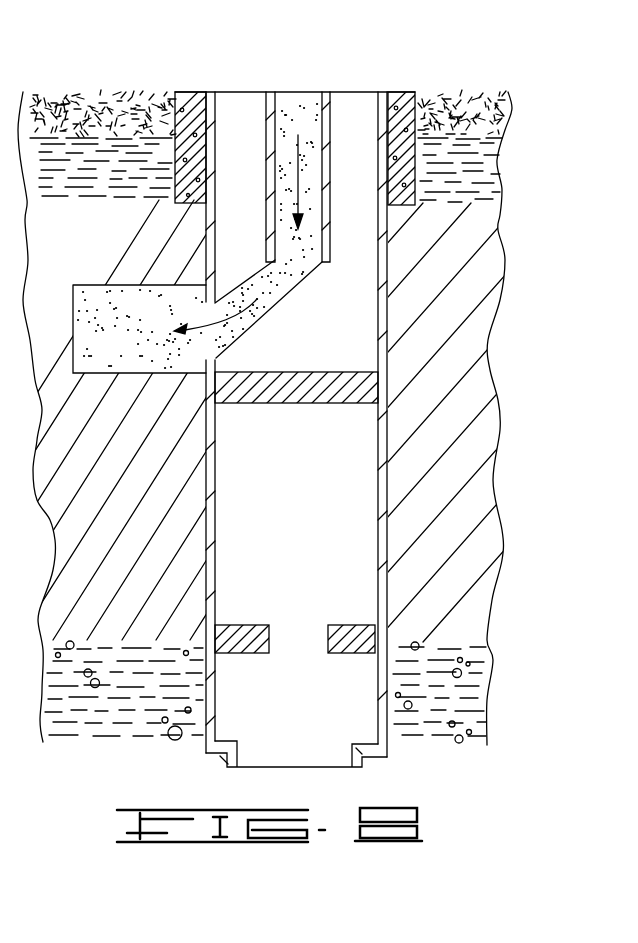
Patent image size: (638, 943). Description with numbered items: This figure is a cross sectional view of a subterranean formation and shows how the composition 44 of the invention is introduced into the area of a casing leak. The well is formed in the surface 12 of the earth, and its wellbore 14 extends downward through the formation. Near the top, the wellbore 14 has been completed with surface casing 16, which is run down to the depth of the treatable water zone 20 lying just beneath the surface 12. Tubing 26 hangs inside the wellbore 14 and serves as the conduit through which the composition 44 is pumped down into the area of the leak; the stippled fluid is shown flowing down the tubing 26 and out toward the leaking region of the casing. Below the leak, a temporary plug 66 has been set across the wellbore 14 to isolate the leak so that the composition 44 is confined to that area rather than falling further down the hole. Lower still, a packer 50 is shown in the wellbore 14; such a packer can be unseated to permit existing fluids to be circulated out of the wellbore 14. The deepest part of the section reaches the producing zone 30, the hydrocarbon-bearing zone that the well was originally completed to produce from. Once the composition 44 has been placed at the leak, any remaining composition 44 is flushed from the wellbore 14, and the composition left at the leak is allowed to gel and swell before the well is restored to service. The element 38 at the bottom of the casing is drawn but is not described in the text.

The surface 12 is at (467, 92).
The treatable water zone 20 is at (492, 160).
The surface casing 16 is at (408, 208).
The wellbore 14 is at (224, 116).
The composition 44 is at (290, 102).
The tubing 26 is at (333, 112).
The temporary plug 66 is at (290, 408).
The packer 50 is at (342, 625).
The producing zone 30 is at (480, 700).
The casing shoe 38 is at (328, 770).